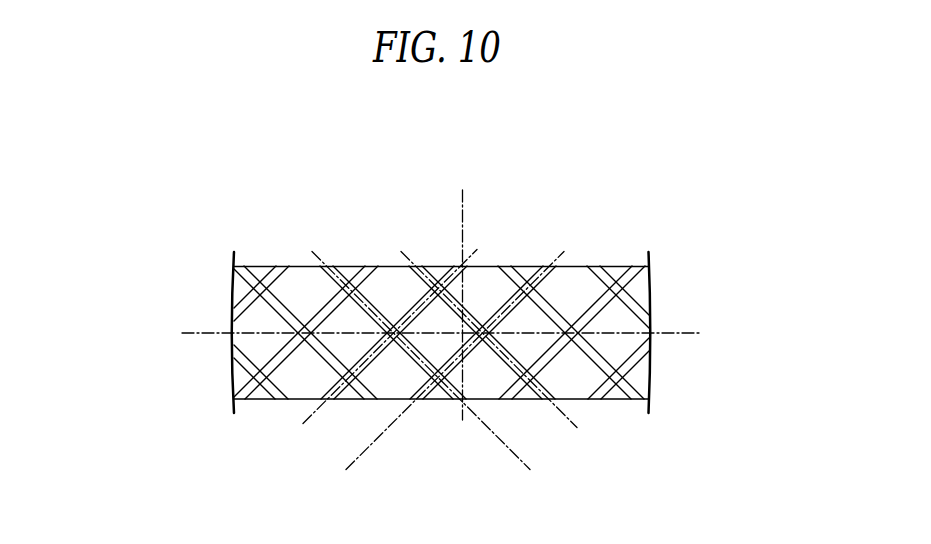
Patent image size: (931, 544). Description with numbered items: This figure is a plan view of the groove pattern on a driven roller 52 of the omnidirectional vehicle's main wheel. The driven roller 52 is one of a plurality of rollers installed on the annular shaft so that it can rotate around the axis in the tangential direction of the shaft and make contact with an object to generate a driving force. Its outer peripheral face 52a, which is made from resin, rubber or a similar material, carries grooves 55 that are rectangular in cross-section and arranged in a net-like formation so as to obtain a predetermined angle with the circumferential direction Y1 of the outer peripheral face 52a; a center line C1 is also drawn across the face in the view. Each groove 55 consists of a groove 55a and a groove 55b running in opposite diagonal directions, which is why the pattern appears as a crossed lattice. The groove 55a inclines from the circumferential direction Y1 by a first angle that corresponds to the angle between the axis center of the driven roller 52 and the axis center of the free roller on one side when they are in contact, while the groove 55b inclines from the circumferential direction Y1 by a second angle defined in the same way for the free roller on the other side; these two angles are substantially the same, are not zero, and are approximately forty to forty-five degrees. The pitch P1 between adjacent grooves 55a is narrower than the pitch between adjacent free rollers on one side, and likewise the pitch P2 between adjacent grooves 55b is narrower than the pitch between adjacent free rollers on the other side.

The driven roller 52 is at (437, 277).
The outer peripheral face 52a is at (485, 284).
The groove 55 is at (437, 285).
The groove 55a is at (255, 281).
The groove 55b is at (632, 272).
The center line C1 is at (463, 208).
The circumferential direction Y1 is at (190, 332).
The pitch P1 is at (575, 425).
The pitch P2 is at (303, 423).